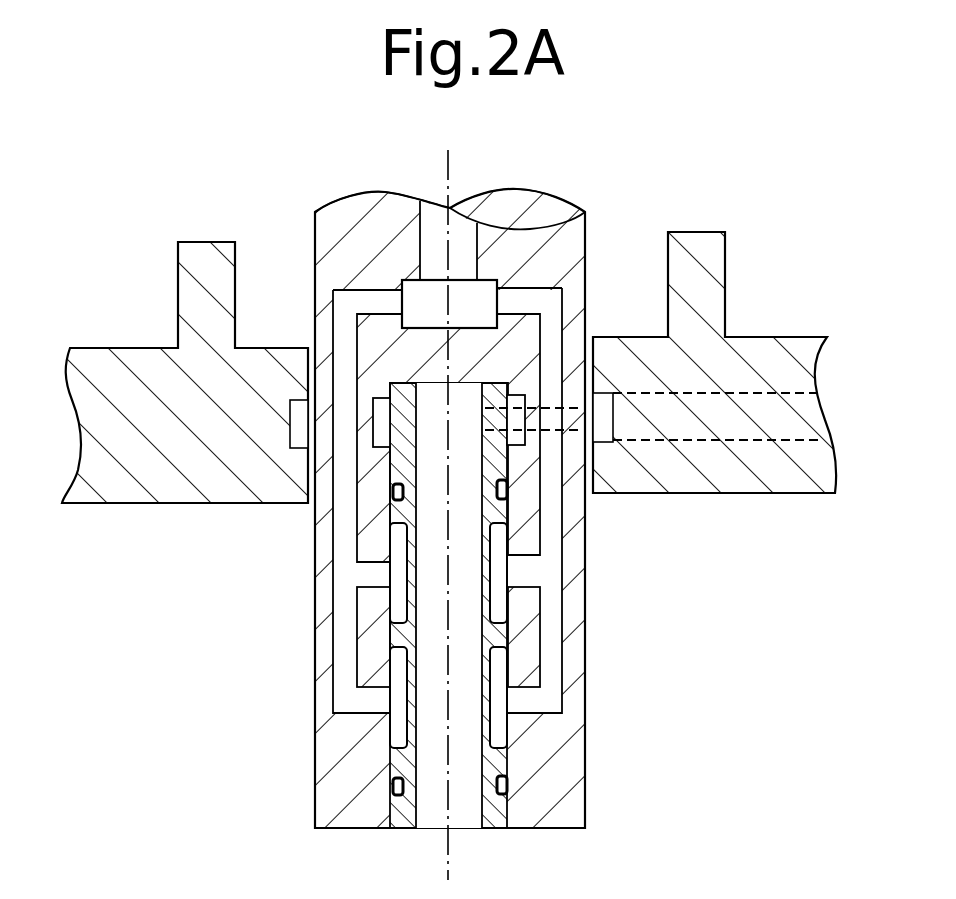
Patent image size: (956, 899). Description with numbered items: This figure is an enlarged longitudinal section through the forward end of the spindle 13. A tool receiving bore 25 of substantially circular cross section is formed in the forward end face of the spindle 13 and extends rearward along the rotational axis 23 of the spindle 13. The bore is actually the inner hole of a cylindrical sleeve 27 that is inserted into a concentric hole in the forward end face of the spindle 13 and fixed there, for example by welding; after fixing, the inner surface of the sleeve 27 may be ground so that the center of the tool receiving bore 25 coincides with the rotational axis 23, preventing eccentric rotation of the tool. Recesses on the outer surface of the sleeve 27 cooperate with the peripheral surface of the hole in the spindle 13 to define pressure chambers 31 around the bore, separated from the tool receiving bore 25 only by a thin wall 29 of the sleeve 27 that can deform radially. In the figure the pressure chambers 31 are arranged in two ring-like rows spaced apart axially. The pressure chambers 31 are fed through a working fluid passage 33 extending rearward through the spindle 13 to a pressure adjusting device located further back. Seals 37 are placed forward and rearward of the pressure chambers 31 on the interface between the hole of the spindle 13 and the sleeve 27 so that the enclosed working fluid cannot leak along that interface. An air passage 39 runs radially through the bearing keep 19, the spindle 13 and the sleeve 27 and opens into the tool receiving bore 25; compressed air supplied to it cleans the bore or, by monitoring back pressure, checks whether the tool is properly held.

The spindle 13 is at (580, 314).
The bearing keep 19 is at (792, 478).
The rotational axis 23 is at (450, 858).
The tool receiving bore 25 is at (473, 807).
The cylindrical sleeve 27 is at (513, 762).
The thin wall 29 is at (492, 598).
The pressure chamber 31 is at (500, 548).
The working fluid passage 33 is at (465, 253).
The seal 37 is at (392, 494).
The air passage 39 is at (776, 392).